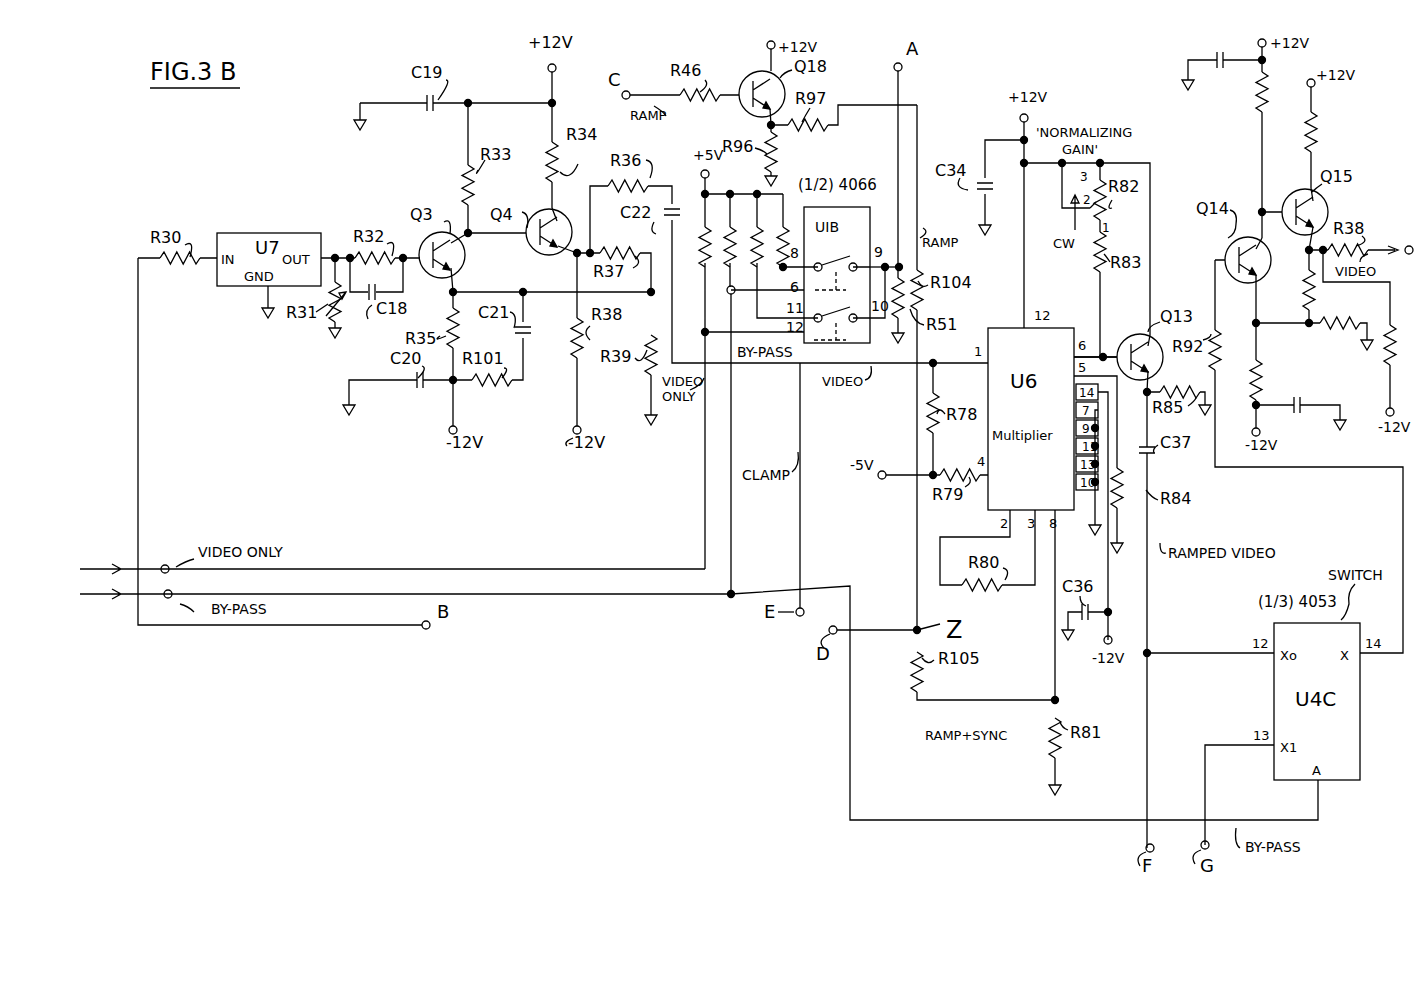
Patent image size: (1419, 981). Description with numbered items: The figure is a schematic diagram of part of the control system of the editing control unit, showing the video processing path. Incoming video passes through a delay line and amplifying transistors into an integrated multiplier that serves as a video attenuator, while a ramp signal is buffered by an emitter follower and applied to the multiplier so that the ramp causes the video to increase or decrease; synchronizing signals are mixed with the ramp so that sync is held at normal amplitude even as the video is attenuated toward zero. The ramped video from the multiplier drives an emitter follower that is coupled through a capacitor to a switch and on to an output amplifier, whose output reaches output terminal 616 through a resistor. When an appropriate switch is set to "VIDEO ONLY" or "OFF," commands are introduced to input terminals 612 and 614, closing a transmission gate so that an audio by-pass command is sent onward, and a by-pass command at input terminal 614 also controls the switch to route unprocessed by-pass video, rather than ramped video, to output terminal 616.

The input terminal 612 is at (162, 569).
The input terminal 614 is at (166, 598).
The output terminal 616 is at (1408, 246).